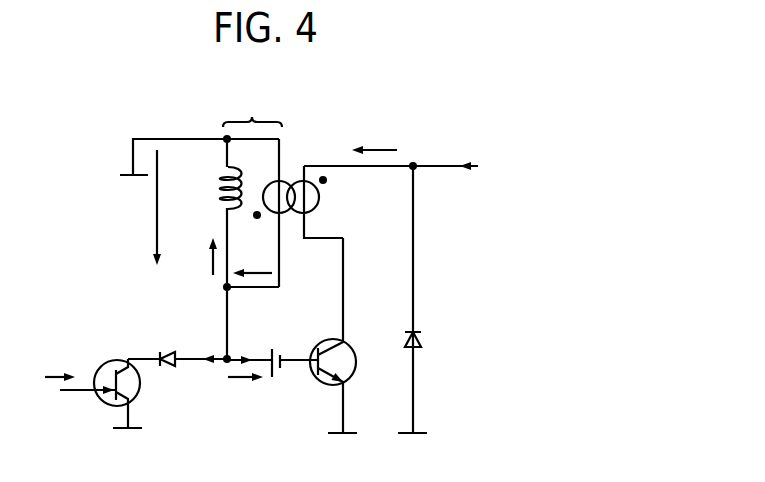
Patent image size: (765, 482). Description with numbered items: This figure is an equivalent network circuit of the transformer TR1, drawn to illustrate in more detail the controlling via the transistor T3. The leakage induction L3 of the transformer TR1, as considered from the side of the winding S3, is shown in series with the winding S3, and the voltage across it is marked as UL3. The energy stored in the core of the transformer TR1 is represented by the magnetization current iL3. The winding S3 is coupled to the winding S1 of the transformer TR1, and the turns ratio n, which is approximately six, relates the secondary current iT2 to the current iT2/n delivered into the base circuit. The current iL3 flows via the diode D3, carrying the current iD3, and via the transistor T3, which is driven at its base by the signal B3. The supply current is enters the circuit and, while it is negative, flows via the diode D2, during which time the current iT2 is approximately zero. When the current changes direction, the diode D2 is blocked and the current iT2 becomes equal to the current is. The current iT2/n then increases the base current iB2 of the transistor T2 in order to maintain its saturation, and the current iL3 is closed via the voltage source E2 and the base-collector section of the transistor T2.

The leakage induction L3 is at (217, 188).
The voltage across leakage induction UL3 is at (141, 207).
The magnetization current iL3 is at (199, 257).
The winding S3 is at (252, 109).
The transformer TR1 is at (302, 213).
The winding S1 is at (278, 110).
The turns ratio n is at (293, 101).
The transistor T2 current iT2 is at (243, 315).
The supply current is is at (452, 166).
The diode D2 is at (420, 299).
The transistor T3 is at (101, 382).
The base drive of transistor T3 B3 is at (56, 363).
The diode D3 is at (177, 346).
The diode D3 current iD3 is at (202, 373).
The voltage source E2 is at (272, 351).
The base current of transistor T2 iB2 is at (245, 389).
The transistor T2 is at (338, 335).